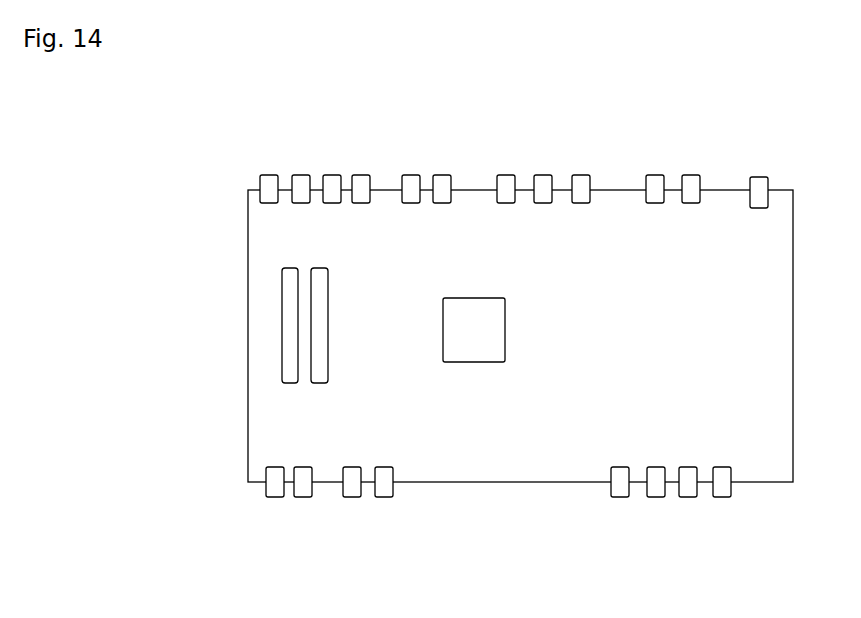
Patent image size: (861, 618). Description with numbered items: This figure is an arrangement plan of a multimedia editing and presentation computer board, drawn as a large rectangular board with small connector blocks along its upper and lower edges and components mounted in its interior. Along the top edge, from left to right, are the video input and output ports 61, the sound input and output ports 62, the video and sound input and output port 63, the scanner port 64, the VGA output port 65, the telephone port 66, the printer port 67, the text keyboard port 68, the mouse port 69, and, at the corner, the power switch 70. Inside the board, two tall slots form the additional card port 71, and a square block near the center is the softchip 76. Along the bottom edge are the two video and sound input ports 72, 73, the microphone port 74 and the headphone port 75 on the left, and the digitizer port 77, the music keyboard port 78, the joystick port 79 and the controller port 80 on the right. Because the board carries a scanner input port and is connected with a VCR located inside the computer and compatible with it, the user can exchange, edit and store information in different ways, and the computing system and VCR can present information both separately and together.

The video input and output ports 61 is at (303, 187).
The sound input and output ports 62 is at (358, 183).
The video and sound input and output port 63 is at (410, 180).
The scanner port 64 is at (440, 178).
The VGA output port 65 is at (503, 180).
The telephone port 66 is at (545, 180).
The printer port 67 is at (582, 180).
The text keyboard port 68 is at (653, 185).
The mouse port 69 is at (693, 185).
The power switch 70 is at (760, 187).
The additional card port 71 is at (317, 333).
The video and sound input port 72 is at (275, 480).
The video and sound input port 73 is at (300, 487).
The microphone port 74 is at (350, 488).
The headphone port 75 is at (382, 490).
The softchip 76 is at (472, 350).
The digitizer port 77 is at (613, 492).
The music keyboard port 78 is at (655, 490).
The joystick port 79 is at (686, 490).
The controller port 80 is at (723, 492).